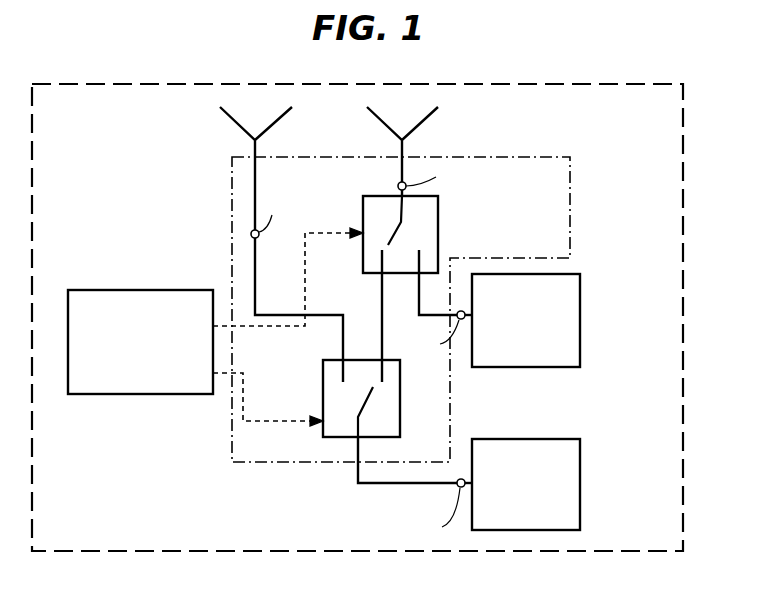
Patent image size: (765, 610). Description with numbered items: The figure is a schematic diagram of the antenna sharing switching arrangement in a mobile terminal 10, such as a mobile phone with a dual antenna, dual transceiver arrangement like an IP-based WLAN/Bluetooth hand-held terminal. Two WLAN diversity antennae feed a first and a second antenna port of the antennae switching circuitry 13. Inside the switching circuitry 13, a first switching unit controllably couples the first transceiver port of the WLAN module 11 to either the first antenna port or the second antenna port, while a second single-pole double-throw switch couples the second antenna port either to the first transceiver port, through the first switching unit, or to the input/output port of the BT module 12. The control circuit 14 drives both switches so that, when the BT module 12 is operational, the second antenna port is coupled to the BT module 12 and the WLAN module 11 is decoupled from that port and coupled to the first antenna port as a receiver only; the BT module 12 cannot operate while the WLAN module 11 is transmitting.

The mobile terminal 10 is at (600, 84).
The WLAN module 11 is at (580, 462).
The BT module 12 is at (580, 292).
The antennae switching circuitry 13 is at (232, 212).
The control circuit 14 is at (102, 290).